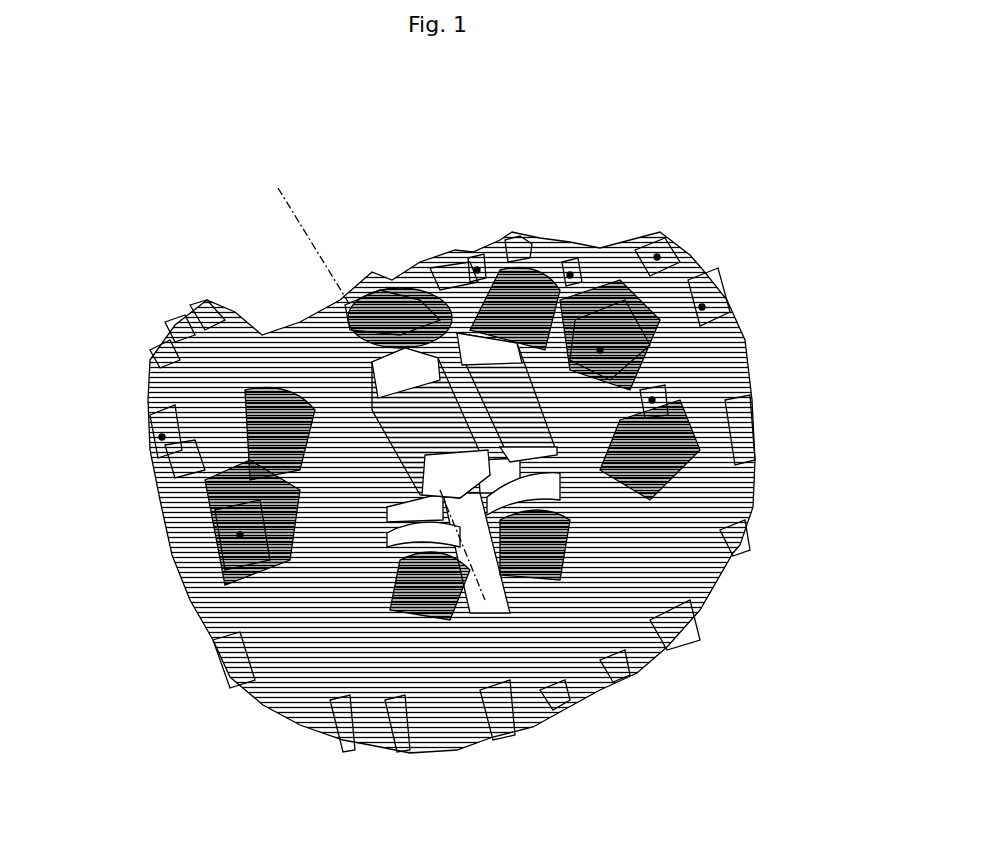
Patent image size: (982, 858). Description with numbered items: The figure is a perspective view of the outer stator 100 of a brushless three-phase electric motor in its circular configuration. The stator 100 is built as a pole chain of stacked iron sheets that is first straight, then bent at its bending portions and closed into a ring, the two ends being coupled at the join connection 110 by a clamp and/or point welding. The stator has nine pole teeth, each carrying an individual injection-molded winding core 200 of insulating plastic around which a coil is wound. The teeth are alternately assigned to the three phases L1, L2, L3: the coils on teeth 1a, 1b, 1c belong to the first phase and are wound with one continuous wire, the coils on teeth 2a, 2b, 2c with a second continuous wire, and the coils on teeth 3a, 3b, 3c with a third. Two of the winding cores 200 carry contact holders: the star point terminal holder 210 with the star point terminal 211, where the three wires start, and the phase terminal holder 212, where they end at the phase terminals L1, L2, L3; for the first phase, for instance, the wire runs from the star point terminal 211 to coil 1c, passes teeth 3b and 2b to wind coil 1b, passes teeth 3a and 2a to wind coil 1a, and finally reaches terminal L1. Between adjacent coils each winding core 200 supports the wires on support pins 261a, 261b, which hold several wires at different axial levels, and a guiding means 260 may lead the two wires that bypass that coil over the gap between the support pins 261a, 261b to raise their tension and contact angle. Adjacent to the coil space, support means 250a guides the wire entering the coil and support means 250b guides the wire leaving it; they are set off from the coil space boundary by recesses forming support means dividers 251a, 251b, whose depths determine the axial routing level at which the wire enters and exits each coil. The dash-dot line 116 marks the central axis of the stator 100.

The stator 100 is at (372, 210).
The central axis 116 is at (253, 177).
The join connection 110 is at (458, 282).
The support means 250a is at (477, 268).
The support means 250b is at (571, 274).
The pole tooth / coil 3c is at (513, 233).
The star point terminal 211 is at (658, 257).
The star point terminal holder 210 is at (703, 307).
The pole tooth / coil 2c is at (600, 350).
The winding core 200 is at (652, 400).
The pole tooth / coil 1c is at (747, 420).
The pole tooth / coil 1a is at (343, 313).
The first phase / phase terminal L1 is at (207, 307).
The second phase / phase terminal L2 is at (173, 330).
The third phase / phase terminal L3 is at (153, 353).
The phase terminal holder 212 is at (162, 437).
The pole tooth / coil 2a is at (170, 453).
The pole tooth / coil 3a is at (240, 535).
The pole tooth / coil 1b is at (213, 640).
The support means divider 251b is at (343, 753).
The support means divider 251a is at (397, 750).
The pole tooth / coil 2b is at (493, 737).
The support pin 261b is at (553, 703).
The pole tooth / coil 3b is at (613, 680).
The guiding means 260 is at (667, 647).
The support pin 261a is at (733, 553).